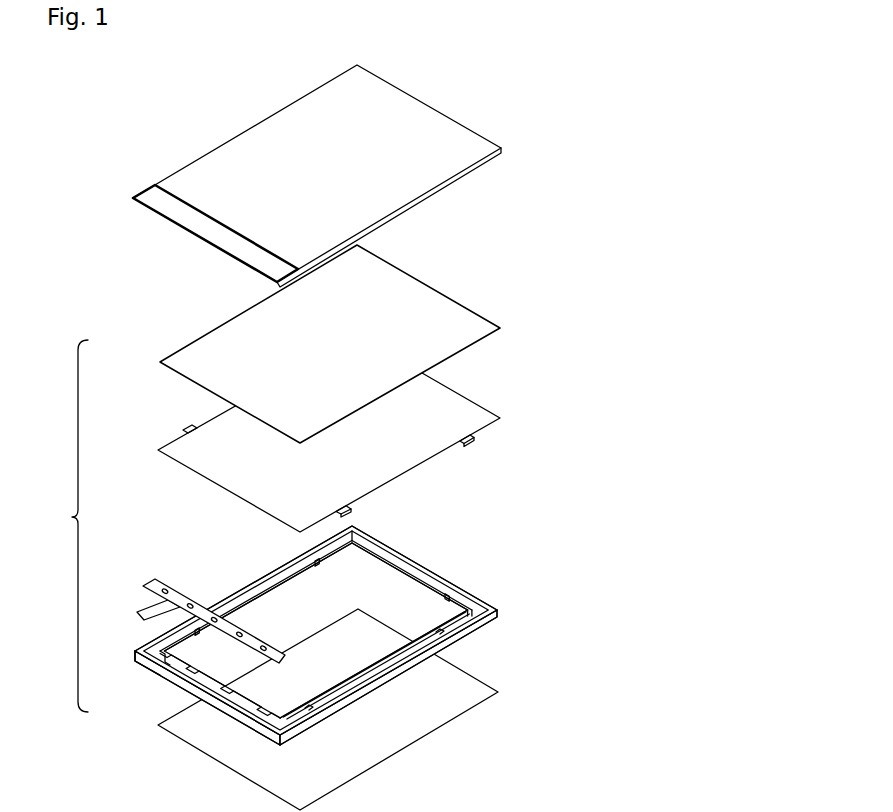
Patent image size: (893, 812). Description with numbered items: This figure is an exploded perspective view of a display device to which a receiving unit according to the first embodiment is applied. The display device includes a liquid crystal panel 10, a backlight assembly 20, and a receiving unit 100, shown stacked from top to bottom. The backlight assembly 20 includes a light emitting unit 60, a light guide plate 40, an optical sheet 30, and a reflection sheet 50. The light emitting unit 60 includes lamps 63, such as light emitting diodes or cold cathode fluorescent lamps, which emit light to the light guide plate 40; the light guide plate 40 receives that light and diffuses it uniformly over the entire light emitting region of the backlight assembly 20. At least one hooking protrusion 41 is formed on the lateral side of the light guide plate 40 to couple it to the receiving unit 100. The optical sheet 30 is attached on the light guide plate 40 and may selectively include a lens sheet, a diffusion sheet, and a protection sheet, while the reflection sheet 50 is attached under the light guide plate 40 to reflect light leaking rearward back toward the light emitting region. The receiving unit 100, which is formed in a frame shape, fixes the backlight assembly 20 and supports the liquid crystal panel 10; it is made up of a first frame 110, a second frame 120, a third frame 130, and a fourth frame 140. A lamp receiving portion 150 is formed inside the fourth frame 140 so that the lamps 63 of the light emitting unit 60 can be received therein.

The liquid crystal panel 10 is at (147, 192).
The backlight assembly 20 is at (67, 526).
The optical sheet 30 is at (168, 358).
The light guide plate 40 is at (306, 434).
The hooking protrusion 41 is at (467, 444).
The reflection sheet 50 is at (167, 721).
The light emitting unit 60 is at (209, 604).
The lamps 63 is at (191, 603).
The receiving unit 100 is at (317, 621).
The first frame 110 is at (250, 576).
The second frame 120 is at (402, 550).
The third frame 130 is at (467, 632).
The fourth frame 140 is at (150, 668).
The lamp receiving portion 150 is at (200, 672).